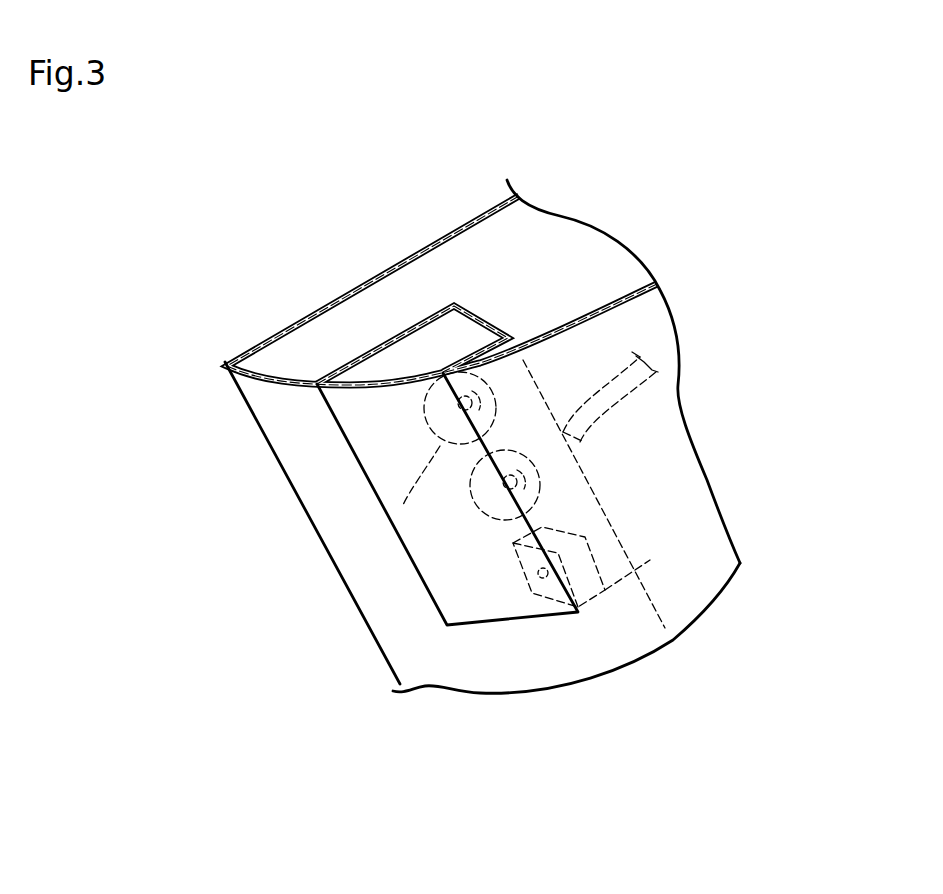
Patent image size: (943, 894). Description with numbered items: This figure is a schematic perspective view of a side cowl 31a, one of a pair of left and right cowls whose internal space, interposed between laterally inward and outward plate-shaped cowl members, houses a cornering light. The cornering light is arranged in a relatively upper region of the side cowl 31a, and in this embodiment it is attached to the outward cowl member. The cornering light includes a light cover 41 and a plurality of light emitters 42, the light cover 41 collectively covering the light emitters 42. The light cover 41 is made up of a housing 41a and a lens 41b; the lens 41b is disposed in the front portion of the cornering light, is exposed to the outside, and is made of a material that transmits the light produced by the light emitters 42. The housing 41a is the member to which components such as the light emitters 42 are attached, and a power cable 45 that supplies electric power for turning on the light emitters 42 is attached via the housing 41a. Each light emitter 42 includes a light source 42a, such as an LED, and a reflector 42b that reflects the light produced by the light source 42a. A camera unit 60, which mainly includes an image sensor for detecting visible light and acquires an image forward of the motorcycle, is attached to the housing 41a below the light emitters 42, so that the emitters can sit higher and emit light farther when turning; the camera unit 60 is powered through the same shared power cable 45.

The side cowl 31a is at (457, 680).
The light cover 41 is at (527, 585).
The housing 41a is at (665, 628).
The lens 41b is at (523, 612).
The light emitter 42 is at (308, 496).
The light source 42a is at (465, 487).
The reflector 42b is at (432, 415).
The power cable 45 is at (610, 400).
The camera unit 60 is at (586, 538).